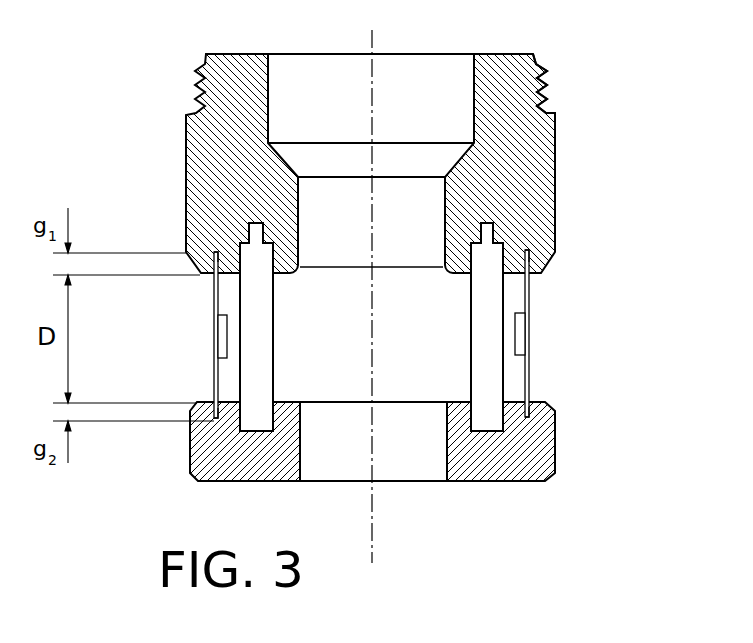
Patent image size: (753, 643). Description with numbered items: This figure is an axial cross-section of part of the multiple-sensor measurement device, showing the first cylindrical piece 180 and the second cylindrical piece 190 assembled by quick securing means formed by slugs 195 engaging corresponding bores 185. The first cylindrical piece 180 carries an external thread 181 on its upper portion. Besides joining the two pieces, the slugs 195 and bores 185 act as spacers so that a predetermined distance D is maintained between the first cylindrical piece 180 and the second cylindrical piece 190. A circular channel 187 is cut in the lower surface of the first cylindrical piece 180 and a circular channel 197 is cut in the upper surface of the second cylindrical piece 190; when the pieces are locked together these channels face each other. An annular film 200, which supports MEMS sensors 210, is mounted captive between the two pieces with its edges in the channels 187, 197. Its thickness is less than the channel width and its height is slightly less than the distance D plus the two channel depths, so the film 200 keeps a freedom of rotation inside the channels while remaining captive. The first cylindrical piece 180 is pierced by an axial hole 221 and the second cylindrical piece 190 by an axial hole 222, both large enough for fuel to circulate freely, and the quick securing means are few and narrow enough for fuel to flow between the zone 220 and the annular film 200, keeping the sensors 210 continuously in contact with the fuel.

The first cylindrical piece 180 is at (555, 145).
The external thread 181 is at (543, 77).
The bore 185 is at (503, 248).
The circular channel 187 is at (529, 251).
The second cylindrical piece 190 is at (570, 461).
The slug 195 is at (487, 374).
The circular channel 197 is at (529, 418).
The annular film 200 is at (529, 288).
The MEMS sensor 210 is at (525, 333).
The zone 220 is at (340, 342).
The axial hole 221 is at (403, 205).
The axial hole 222 is at (408, 468).